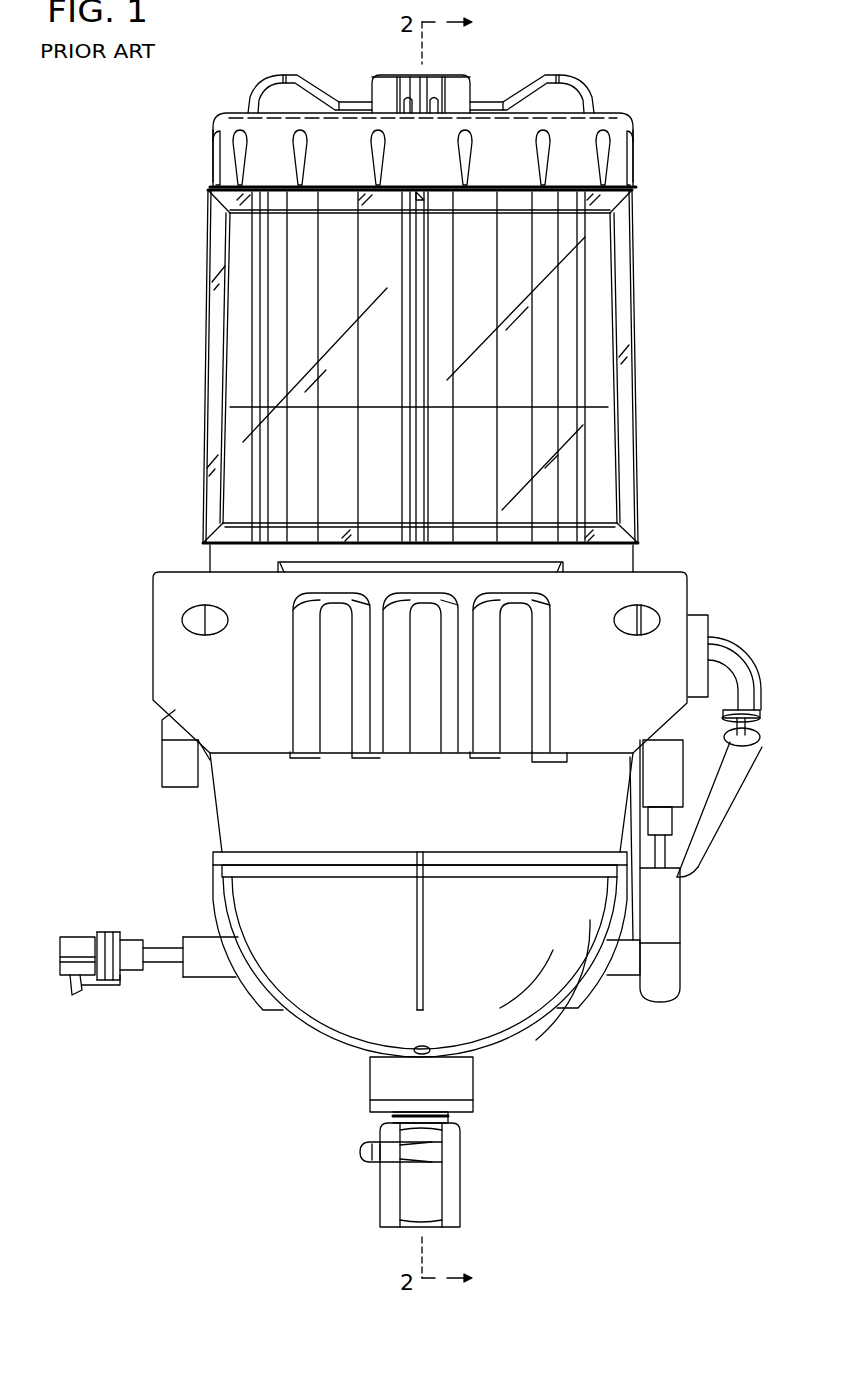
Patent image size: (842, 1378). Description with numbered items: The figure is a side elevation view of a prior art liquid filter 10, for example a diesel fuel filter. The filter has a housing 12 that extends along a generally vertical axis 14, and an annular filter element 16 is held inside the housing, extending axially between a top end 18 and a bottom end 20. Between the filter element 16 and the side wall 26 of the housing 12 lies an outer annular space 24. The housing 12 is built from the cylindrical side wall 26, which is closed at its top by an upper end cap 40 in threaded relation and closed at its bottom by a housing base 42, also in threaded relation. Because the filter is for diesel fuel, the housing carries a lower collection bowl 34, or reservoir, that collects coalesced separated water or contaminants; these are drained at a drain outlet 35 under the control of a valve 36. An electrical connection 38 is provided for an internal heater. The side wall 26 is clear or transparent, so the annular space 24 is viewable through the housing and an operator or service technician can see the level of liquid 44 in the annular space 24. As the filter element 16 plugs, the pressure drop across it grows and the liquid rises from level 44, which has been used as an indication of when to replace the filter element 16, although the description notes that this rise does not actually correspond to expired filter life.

The liquid filter 10 is at (112, 243).
The housing 12 is at (200, 365).
The vertical axis 14 is at (420, 60).
The annular filter element 16 is at (567, 330).
The top end 18 is at (610, 205).
The bottom end 20 is at (605, 540).
The outer annular space 24 is at (600, 253).
The side wall 26 is at (632, 281).
The lower collection bowl 34 is at (322, 1042).
The drain outlet 35 is at (442, 1230).
The valve 36 is at (360, 1152).
The electrical connection 38 is at (80, 940).
The upper end cap 40 is at (615, 121).
The housing base 42 is at (158, 600).
The liquid level 44 is at (605, 408).